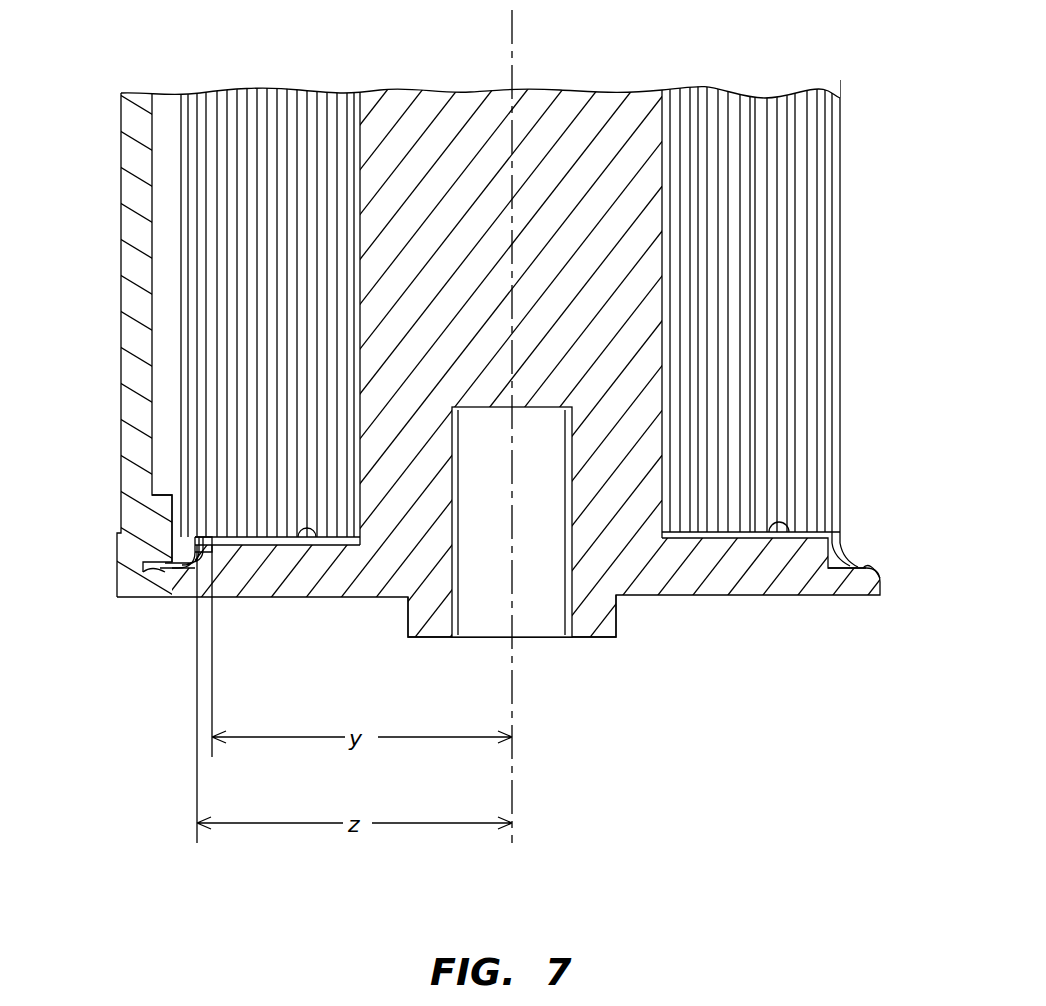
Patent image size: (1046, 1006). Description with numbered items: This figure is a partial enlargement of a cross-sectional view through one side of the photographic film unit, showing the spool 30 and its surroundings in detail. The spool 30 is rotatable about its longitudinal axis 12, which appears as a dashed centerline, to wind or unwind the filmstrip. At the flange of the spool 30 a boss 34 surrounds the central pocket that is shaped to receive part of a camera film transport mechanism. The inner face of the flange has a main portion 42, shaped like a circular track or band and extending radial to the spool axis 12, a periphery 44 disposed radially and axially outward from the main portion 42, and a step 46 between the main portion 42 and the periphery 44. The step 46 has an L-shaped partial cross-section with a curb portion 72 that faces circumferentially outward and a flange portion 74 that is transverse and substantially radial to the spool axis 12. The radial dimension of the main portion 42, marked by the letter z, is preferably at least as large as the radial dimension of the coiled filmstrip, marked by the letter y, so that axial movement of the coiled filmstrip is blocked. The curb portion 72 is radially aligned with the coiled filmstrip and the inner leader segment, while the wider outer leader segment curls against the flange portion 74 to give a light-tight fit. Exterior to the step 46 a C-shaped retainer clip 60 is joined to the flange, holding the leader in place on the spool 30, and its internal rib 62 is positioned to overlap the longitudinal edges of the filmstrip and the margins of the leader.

The longitudinal axis 12 is at (513, 667).
The spool 30 is at (582, 118).
The boss 34 is at (617, 612).
The main portion 42 is at (318, 540).
The periphery 44 is at (882, 566).
The step 46 is at (210, 548).
The retainer clip 60 is at (121, 290).
The internal rib 62 is at (153, 522).
The curb portion 72 is at (847, 543).
The flange portion 74 is at (862, 570).